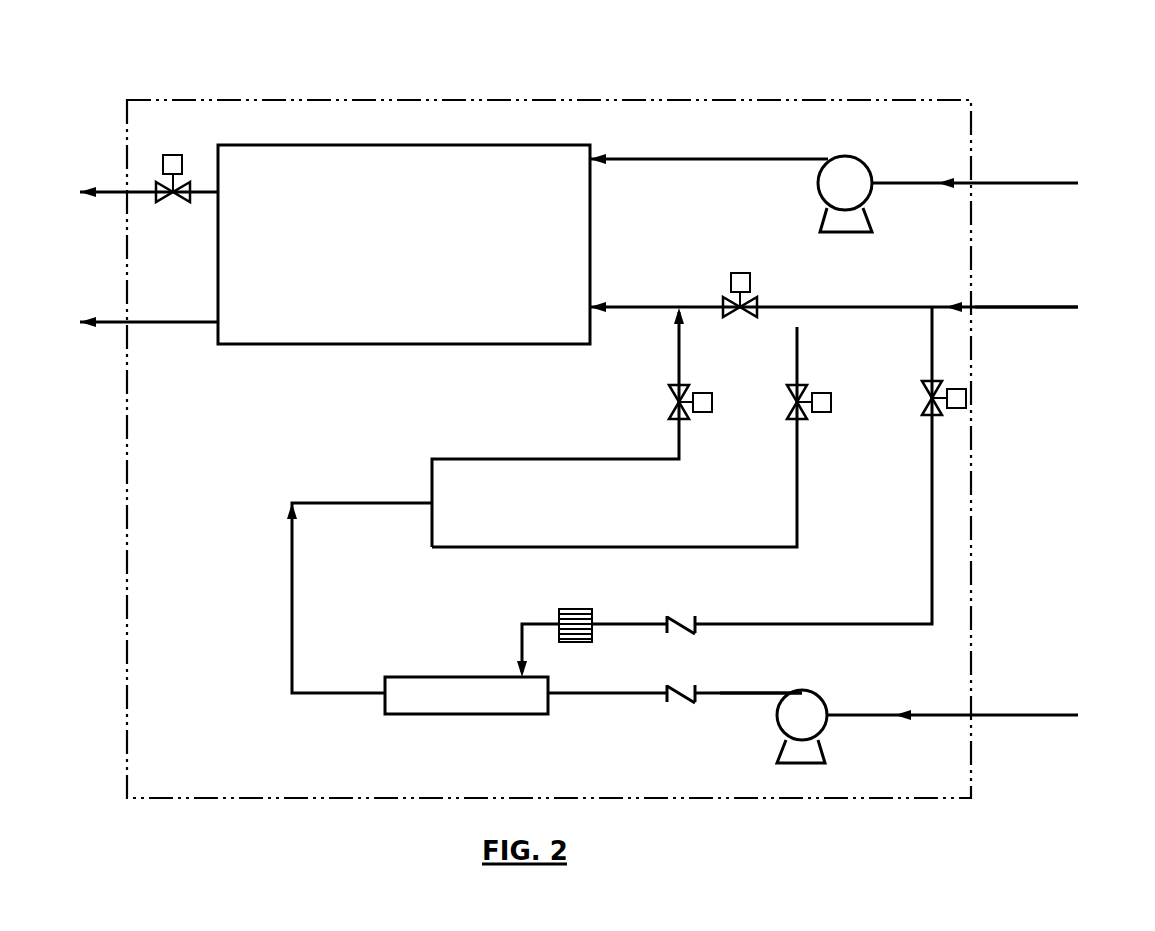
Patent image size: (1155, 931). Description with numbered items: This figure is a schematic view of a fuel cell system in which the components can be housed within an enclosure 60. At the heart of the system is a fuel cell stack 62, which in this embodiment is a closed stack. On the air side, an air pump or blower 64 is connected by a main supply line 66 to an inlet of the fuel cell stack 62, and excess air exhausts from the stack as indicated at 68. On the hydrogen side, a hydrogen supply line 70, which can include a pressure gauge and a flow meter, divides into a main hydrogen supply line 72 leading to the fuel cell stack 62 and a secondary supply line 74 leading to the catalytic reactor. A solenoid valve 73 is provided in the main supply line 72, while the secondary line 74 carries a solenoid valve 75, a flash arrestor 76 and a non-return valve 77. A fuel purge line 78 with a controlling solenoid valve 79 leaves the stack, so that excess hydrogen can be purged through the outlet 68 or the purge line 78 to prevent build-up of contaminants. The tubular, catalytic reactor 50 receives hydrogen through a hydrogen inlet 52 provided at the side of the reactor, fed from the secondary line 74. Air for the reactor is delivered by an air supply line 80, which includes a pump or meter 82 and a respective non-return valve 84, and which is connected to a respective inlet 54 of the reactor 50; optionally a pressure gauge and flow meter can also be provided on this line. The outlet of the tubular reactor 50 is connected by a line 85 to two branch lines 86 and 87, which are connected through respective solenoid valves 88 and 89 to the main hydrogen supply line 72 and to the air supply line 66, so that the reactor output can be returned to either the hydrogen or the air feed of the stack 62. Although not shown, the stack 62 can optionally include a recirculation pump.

The tubular catalytic reactor 50 is at (405, 714).
The hydrogen inlet 52 is at (520, 627).
The inlet 54 is at (605, 693).
The enclosure 60 is at (445, 100).
The fuel cell stack 62 is at (305, 344).
The air pump or blower 64 is at (862, 172).
The main supply line 66 is at (703, 159).
The excess air exhaust 68 is at (190, 322).
The hydrogen supply line 70 is at (1035, 307).
The main hydrogen supply line 72 is at (632, 307).
The solenoid valve 73 is at (740, 273).
The secondary supply line 74 is at (935, 490).
The solenoid valve 75 is at (966, 400).
The flash arrestor 76 is at (568, 609).
The non-return valve 77 is at (684, 616).
The fuel purge line 78 is at (148, 192).
The solenoid valve 79 is at (173, 155).
The air supply line 80 is at (748, 691).
The pump or meter 82 is at (820, 702).
The non-return valve 84 is at (683, 702).
The line 85 is at (292, 615).
The branch line 86 is at (655, 459).
The branch line 87 is at (548, 547).
The solenoid valve 88 is at (703, 412).
The solenoid valve 89 is at (820, 412).